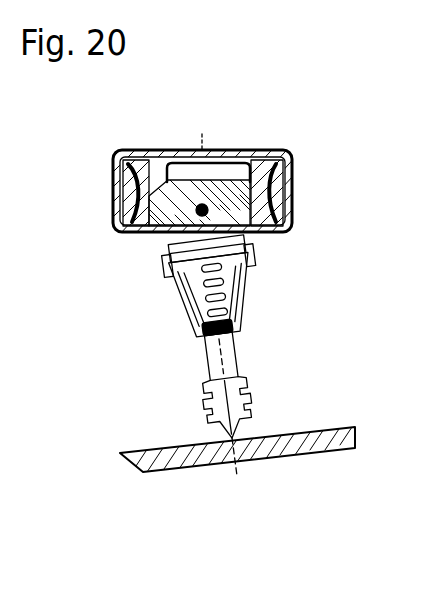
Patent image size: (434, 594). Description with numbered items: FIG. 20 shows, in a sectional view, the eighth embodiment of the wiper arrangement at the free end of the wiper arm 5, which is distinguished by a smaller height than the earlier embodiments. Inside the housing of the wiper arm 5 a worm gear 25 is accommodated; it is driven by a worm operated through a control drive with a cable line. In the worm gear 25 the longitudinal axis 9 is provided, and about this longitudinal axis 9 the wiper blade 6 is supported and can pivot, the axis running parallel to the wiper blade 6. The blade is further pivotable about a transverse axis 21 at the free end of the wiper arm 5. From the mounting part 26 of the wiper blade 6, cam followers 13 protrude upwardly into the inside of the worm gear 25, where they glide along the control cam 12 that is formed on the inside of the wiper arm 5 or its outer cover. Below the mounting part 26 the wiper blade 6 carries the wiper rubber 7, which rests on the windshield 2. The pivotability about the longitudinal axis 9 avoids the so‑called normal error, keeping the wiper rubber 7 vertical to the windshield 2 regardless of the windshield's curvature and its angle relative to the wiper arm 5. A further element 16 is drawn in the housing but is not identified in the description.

The windshield 2 is at (177, 467).
The wiper arm 5 is at (120, 181).
The wiper blade 6 is at (227, 363).
The wiper rubber 7 is at (245, 398).
The longitudinal axis 9 is at (168, 239).
The control cam 12 is at (178, 150).
The cam followers 13 is at (128, 205).
The band 16 is at (233, 155).
The transverse axis 21 is at (277, 272).
The worm gear 25 is at (288, 185).
The mounting part 26 is at (148, 232).